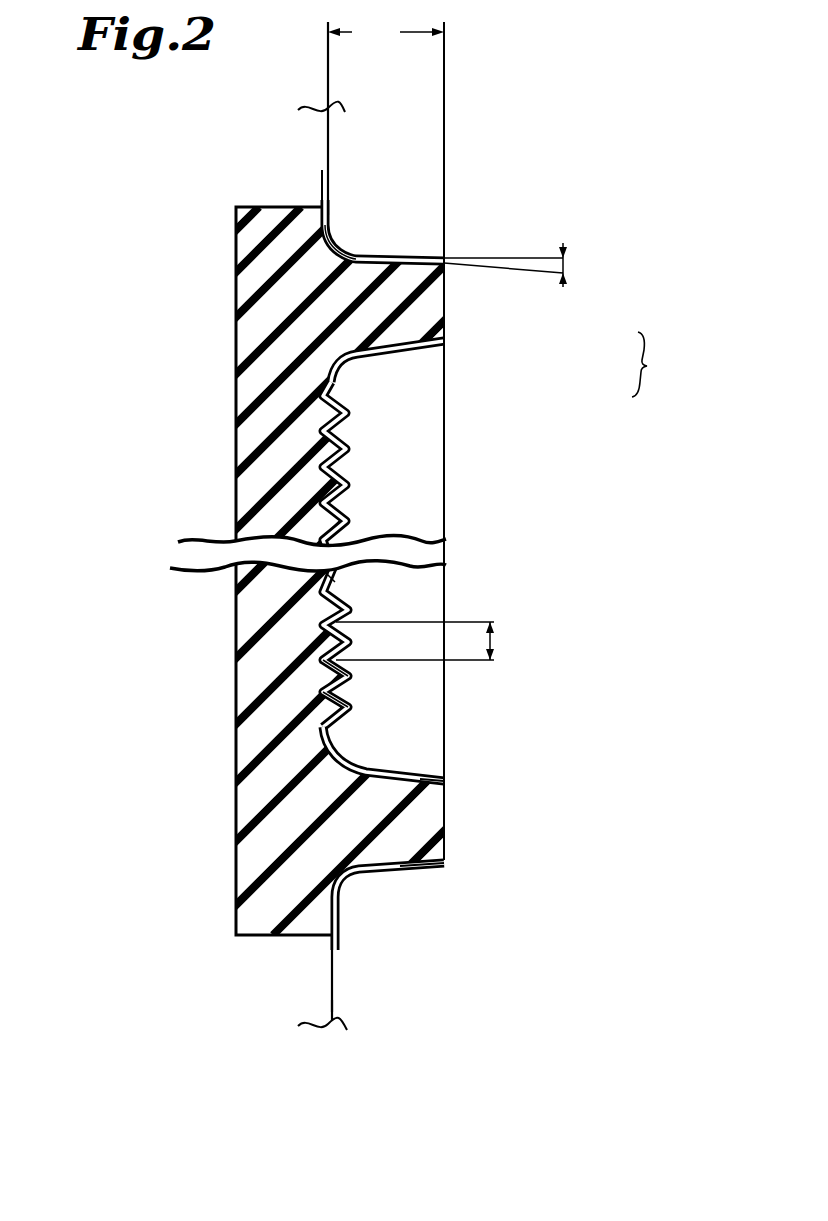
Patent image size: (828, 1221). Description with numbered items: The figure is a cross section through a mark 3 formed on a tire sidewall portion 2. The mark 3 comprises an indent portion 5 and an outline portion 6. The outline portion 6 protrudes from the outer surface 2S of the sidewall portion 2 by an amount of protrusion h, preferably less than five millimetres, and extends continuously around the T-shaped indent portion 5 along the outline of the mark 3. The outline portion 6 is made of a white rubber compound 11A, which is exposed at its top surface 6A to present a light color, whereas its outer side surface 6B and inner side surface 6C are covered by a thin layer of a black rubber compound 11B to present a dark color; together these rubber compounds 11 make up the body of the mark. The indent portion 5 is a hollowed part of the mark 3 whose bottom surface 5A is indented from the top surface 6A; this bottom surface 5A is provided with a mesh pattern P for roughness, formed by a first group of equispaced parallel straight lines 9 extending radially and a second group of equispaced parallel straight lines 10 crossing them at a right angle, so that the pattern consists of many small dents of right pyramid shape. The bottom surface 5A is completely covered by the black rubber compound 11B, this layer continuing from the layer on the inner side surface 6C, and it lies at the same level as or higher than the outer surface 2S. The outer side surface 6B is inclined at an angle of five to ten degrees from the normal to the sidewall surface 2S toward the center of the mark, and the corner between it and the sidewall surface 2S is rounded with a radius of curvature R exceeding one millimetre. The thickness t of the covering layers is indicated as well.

The tire sidewall portion 2 is at (337, 985).
The outer surface of the tire sidewall portion 2S is at (337, 1008).
The mark 3 is at (648, 364).
The indent portion 5 is at (397, 475).
The bottom surface 5A is at (333, 582).
The outline portion 6 is at (468, 312).
The top surface of the outline portion 6A is at (443, 803).
The outer side surface of the outline portion 6B is at (423, 870).
The inner side surface of the outline portion 6C is at (415, 766).
The parallel straight lines 9 is at (337, 700).
The parallel straight lines 10 is at (335, 668).
The die body 11 is at (518, 810).
The white rubber compound 11A is at (440, 832).
The black rubber compound 11B is at (447, 777).
The mesh pattern P is at (397, 512).
The radius of curvature R is at (344, 226).
The amount of protrusion h is at (386, 31).
The thickness t is at (493, 641).